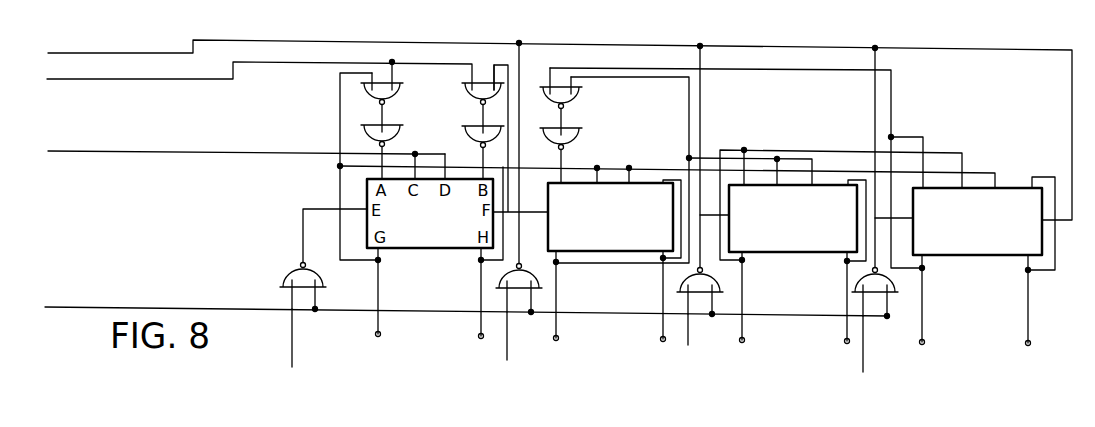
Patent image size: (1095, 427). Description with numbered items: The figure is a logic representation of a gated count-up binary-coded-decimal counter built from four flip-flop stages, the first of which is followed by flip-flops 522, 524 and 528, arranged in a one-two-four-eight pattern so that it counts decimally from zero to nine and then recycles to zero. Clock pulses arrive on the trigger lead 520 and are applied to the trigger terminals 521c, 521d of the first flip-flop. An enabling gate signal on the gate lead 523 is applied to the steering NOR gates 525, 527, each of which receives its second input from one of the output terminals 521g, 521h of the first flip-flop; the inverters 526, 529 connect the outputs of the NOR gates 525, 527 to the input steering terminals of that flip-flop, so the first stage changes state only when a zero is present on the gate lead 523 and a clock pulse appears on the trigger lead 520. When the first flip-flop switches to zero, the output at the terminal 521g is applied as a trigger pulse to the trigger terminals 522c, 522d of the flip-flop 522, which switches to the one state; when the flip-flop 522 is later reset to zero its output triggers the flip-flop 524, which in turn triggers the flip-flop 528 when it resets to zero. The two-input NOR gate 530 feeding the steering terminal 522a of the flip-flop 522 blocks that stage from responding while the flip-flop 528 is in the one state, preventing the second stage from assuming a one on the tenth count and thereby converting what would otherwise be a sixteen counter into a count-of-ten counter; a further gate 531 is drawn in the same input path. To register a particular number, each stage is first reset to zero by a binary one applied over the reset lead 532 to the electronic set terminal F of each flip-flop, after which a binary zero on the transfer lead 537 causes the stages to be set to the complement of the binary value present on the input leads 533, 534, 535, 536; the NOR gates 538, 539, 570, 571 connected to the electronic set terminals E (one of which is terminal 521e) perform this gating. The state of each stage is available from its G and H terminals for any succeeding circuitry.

The reset lead 532 is at (171, 53).
The gate input lead 523 is at (158, 79).
The trigger lead 520 is at (193, 151).
The transfer lead 537 is at (200, 307).
The steering NOR gate 525 is at (401, 92).
The inverter 526 is at (422, 123).
The steering NOR gate 527 is at (463, 88).
The inverter 529 is at (463, 129).
The two-input NOR gate 530 is at (582, 90).
The NAND gate 531 is at (582, 129).
The trigger terminal 521c is at (412, 163).
The trigger terminal 521d is at (447, 170).
The input E of flip-flop 521 521e is at (316, 209).
The output terminal 521g is at (381, 255).
The output terminal 521h is at (479, 262).
The flip-flop 522 is at (606, 252).
The steering terminal 522a is at (562, 170).
The trigger terminal 522c is at (601, 174).
The trigger terminal 522d is at (633, 174).
The flip-flop 524 is at (778, 253).
The flip-flop 528 is at (960, 255).
The NOR gate 538 is at (325, 288).
The NOR gate 539 is at (538, 281).
The NOR gate 570 is at (720, 282).
The NOR gate 571 is at (895, 283).
The input lead 533 is at (292, 333).
The input lead 534 is at (507, 335).
The input lead 535 is at (688, 342).
The input lead 536 is at (863, 347).